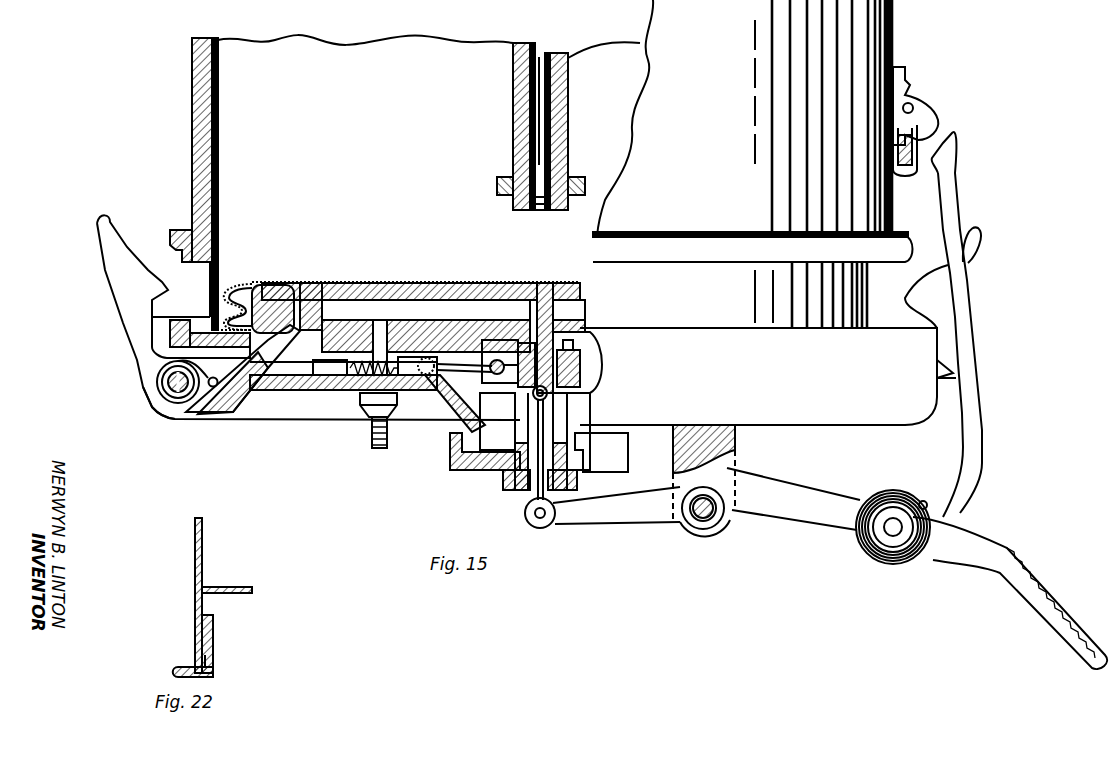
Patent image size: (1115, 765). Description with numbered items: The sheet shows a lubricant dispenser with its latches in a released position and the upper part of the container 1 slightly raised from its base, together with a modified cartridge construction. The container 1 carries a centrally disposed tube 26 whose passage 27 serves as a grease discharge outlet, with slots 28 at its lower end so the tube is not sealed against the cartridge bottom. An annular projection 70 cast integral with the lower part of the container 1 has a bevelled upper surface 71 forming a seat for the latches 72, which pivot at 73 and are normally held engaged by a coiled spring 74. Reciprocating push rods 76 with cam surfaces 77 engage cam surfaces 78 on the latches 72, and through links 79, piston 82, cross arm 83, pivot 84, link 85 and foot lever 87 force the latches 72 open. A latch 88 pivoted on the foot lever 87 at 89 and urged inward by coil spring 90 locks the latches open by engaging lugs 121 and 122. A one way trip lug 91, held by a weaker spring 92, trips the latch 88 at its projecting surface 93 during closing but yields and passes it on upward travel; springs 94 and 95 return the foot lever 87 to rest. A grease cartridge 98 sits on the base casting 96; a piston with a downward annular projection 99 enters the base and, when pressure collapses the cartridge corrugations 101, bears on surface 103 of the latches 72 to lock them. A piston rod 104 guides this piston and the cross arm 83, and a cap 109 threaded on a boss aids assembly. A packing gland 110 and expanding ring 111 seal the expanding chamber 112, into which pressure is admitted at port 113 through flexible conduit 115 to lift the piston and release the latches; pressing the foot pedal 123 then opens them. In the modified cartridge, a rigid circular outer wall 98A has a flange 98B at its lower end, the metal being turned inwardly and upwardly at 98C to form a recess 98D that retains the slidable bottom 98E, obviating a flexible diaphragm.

In FIG. 15, the container 1 is at (791, 164).
In FIG. 15, the tube 26 is at (513, 134).
In FIG. 15, the passage 27 is at (540, 162).
In FIG. 15, the slots 28 is at (530, 207).
In FIG. 15, the annular projection 70 is at (650, 248).
In FIG. 15, the bevelled upper surface 71 is at (172, 230).
In FIG. 15, the latches 72 is at (125, 272).
In FIG. 15, the pivot 73 is at (165, 380).
In FIG. 15, the coiled spring 74 is at (167, 392).
In FIG. 15, the push rods 76 is at (336, 382).
In FIG. 15, the cam surfaces 77 is at (297, 385).
In FIG. 15, the cam surfaces 78 is at (238, 414).
In FIG. 15, the links 79 is at (455, 370).
In FIG. 15, the piston 82 is at (588, 375).
In FIG. 15, the cross arm 83 is at (504, 415).
In FIG. 15, the pivot 84 is at (546, 441).
In FIG. 15, the link 85 is at (530, 495).
In FIG. 15, the foot lever 87 is at (777, 505).
In FIG. 15, the latch 88 is at (960, 295).
In FIG. 15, the pivot 89 is at (892, 522).
In FIG. 15, the coil spring 90 is at (880, 560).
In FIG. 15, the one way trip lug 91 is at (925, 115).
In FIG. 15, the spring 92 is at (912, 150).
In FIG. 15, the projecting surface 93 is at (952, 153).
In FIG. 15, the spring 94 is at (400, 385).
In FIG. 15, the spring 95 is at (575, 344).
In FIG. 15, the base casting 96 is at (764, 394).
In FIG. 15, the grease cartridge 98 is at (218, 170).
In FIG. 15, the downward annular projection 99 is at (310, 282).
In FIG. 15, the corrugations 101 is at (230, 290).
In FIG. 15, the surface 103 is at (268, 285).
In FIG. 15, the piston rod 104 is at (537, 285).
In FIG. 15, the cap 109 is at (622, 445).
In FIG. 15, the packing gland 110 is at (575, 322).
In FIG. 15, the expanding ring 111 is at (347, 326).
In FIG. 15, the expanding chamber 112 is at (458, 326).
In FIG. 15, the port 113 is at (383, 330).
In FIG. 15, the flexible conduit 115 is at (380, 445).
In FIG. 15, the lug 121 is at (945, 372).
In FIG. 15, the lug 122 is at (948, 378).
In FIG. 15, the foot pedal 123 is at (1050, 603).
In FIG. 22, the outer wall 98A is at (203, 560).
In FIG. 22, the flange 98B is at (180, 672).
In FIG. 22, the inturned metal 98C is at (214, 652).
In FIG. 22, the recess 98D is at (208, 663).
In FIG. 22, the slidable bottom 98E is at (238, 587).